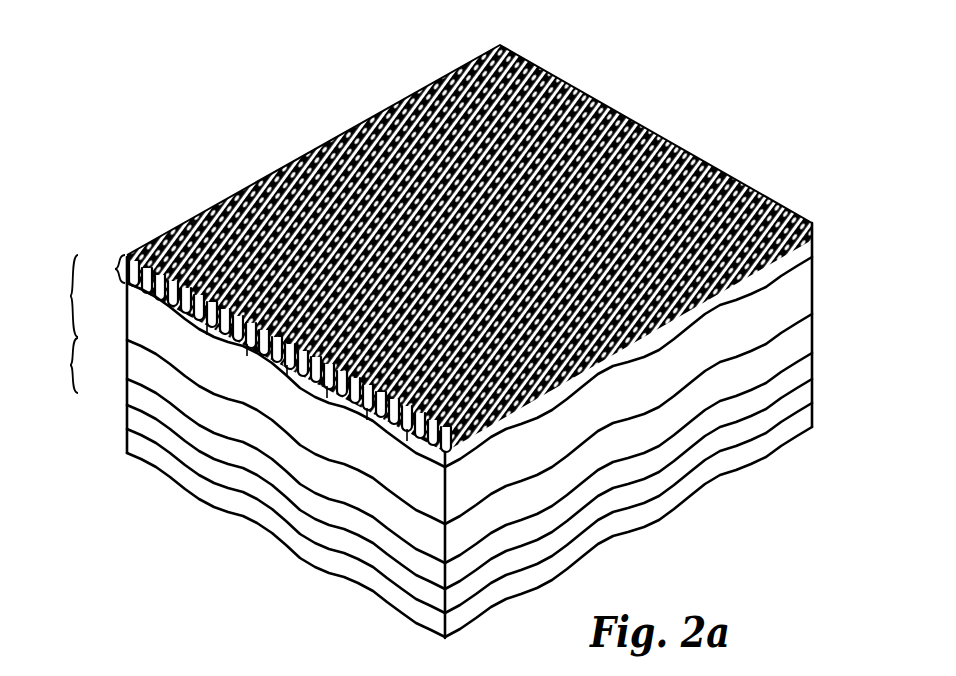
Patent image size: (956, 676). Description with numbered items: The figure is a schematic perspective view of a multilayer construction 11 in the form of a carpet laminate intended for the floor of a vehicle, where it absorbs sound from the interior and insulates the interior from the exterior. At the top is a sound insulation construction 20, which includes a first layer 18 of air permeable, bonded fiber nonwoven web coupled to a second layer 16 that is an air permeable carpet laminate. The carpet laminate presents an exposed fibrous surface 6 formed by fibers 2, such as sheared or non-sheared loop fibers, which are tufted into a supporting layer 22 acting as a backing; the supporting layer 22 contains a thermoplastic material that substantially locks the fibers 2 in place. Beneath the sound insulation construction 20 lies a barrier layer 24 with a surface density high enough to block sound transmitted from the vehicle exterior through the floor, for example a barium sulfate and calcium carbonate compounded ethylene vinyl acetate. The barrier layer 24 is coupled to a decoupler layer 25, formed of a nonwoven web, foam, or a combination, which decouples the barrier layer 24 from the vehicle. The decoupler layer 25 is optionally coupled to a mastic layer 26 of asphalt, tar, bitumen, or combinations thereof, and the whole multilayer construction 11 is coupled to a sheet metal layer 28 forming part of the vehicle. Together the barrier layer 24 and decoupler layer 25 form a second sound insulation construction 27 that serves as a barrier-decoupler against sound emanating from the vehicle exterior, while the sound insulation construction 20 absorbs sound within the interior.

The multilayer construction 11 is at (228, 94).
The exposed fibrous surface 6 is at (250, 184).
The fibers 2 is at (713, 183).
The second layer 16 is at (102, 269).
The sound insulation construction 20 is at (56, 296).
The second sound insulation construction 27 is at (56, 365).
The supporting layer 22 is at (805, 251).
The first layer 18 is at (797, 290).
The barrier layer 24 is at (800, 338).
The decoupler layer 25 is at (797, 371).
The mastic layer 26 is at (757, 419).
The sheet metal layer 28 is at (715, 470).